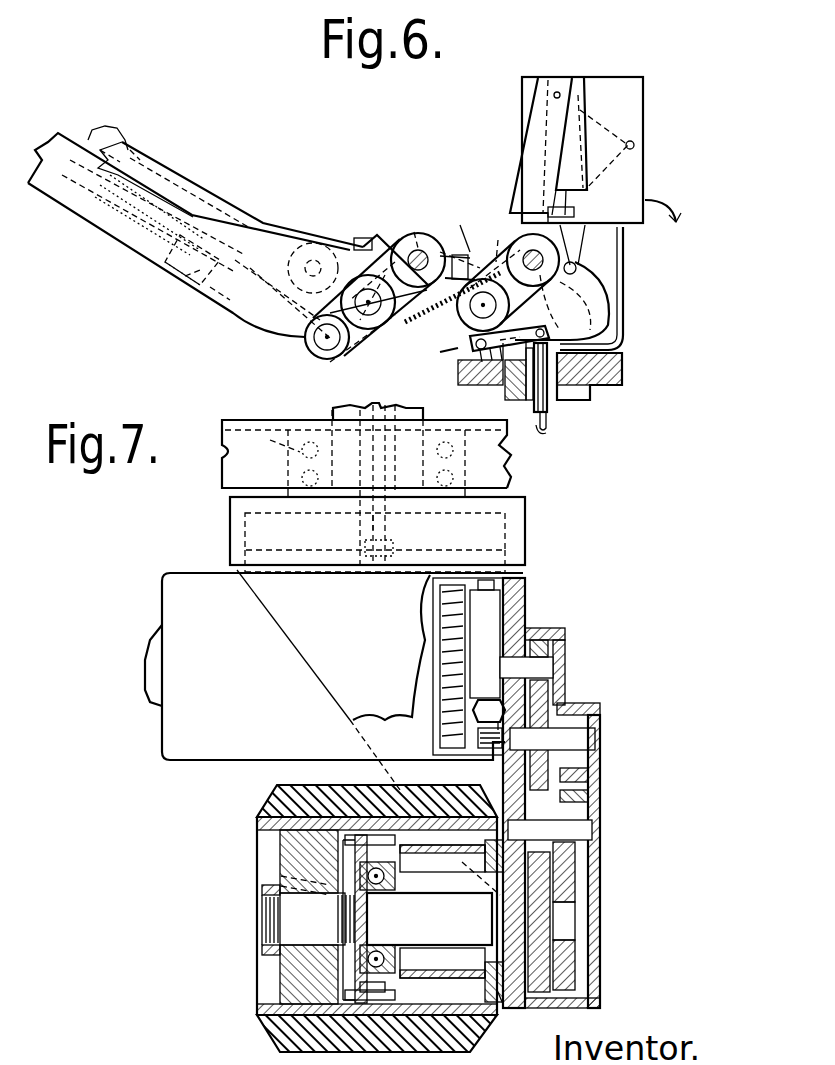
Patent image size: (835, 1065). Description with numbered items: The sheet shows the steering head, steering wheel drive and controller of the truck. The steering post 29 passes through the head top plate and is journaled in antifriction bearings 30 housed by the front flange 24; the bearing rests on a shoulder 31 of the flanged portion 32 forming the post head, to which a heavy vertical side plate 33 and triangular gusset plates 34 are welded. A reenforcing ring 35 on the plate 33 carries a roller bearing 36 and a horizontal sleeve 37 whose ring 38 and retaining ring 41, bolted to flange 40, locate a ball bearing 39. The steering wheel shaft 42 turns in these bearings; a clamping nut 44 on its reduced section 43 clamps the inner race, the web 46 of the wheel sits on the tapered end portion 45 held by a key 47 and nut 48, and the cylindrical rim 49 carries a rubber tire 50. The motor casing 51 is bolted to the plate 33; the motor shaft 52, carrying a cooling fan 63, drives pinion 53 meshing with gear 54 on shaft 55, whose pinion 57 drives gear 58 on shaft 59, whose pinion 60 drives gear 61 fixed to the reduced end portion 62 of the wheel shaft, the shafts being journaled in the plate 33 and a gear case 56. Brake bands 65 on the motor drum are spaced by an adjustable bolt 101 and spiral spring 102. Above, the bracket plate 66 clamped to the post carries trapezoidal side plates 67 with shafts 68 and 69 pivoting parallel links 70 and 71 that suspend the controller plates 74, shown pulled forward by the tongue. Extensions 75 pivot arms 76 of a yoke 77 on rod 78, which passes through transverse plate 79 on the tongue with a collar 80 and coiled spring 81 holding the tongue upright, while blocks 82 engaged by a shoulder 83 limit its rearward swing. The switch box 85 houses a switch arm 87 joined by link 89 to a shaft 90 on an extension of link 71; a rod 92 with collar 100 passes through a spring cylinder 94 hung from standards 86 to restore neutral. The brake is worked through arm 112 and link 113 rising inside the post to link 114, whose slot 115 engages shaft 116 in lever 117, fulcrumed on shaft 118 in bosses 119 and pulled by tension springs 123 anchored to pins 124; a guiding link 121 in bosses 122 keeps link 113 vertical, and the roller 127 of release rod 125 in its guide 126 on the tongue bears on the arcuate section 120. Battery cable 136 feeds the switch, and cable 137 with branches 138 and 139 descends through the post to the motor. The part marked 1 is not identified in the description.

In FIG. 7, the beam 1 is at (222, 452).
In FIG. 7, the front flange 24 is at (252, 468).
In FIG. 6, the steering post 29 is at (588, 390).
In FIG. 7, the steering post 29 is at (333, 412).
In FIG. 7, the antifriction bearings 30 is at (300, 452).
In FIG. 7, the shoulder 31 is at (522, 499).
In FIG. 7, the flanged portion 32 is at (488, 534).
In FIG. 7, the vertical side plate 33 is at (520, 623).
In FIG. 7, the gusset plates 34 is at (328, 667).
In FIG. 7, the reenforcing ring 35 is at (496, 994).
In FIG. 7, the roller bearing 36 is at (495, 882).
In FIG. 7, the cylindrical sleeve 37 is at (462, 862).
In FIG. 7, the ring 38 is at (397, 870).
In FIG. 7, the ball bearing 39 is at (381, 869).
In FIG. 7, the flange 40 is at (386, 990).
In FIG. 7, the retaining ring 41 is at (356, 970).
In FIG. 7, the steering wheel shaft 42 is at (462, 932).
In FIG. 7, the reduced section 43 is at (380, 904).
In FIG. 7, the clamping nut 44 is at (352, 892).
In FIG. 7, the tapered end portion 45 is at (292, 931).
In FIG. 7, the web 46 is at (281, 849).
In FIG. 7, the key 47 is at (281, 876).
In FIG. 7, the nut 48 is at (262, 893).
In FIG. 7, the rim 49 is at (258, 823).
In FIG. 7, the tire 50 is at (276, 796).
In FIG. 7, the motor casing 51 is at (232, 730).
In FIG. 7, the motor shaft 52 is at (540, 666).
In FIG. 7, the pinion 53 is at (565, 641).
In FIG. 7, the gear 54 is at (548, 700).
In FIG. 7, the shaft 55 is at (586, 739).
In FIG. 7, the gear case 56 is at (600, 776).
In FIG. 7, the pinion 57 is at (593, 713).
In FIG. 7, the gear 58 is at (575, 794).
In FIG. 7, the shaft 59 is at (576, 831).
In FIG. 7, the pinion 60 is at (570, 816).
In FIG. 7, the gear 61 is at (547, 957).
In FIG. 7, the reduced end portion 62 is at (548, 925).
In FIG. 7, the cooling fan 63 is at (447, 616).
In FIG. 7, the brake bands 65 is at (489, 618).
In FIG. 6, the plate 66 is at (624, 368).
In FIG. 6, the side plates 67 is at (460, 372).
In FIG. 6, the shaft 68 is at (415, 250).
In FIG. 6, the shaft 69 is at (533, 250).
In FIG. 6, the link 70 is at (380, 258).
In FIG. 6, the link 71 is at (508, 254).
In FIG. 6, the controller plates 74 is at (369, 318).
In FIG. 6, the extensions 75 is at (306, 339).
In FIG. 6, the arms 76 is at (246, 305).
In FIG. 6, the yoke 77 is at (215, 290).
In FIG. 6, the rod 78 is at (192, 280).
In FIG. 6, the transverse plate 79 is at (112, 143).
In FIG. 6, the collar 80 is at (172, 276).
In FIG. 6, the coiled spring 81 is at (120, 243).
In FIG. 6, the blocks 82 is at (368, 330).
In FIG. 6, the shoulder 83 is at (356, 249).
In FIG. 6, the switch box 85 is at (640, 161).
In FIG. 6, the standards 86 is at (538, 112).
In FIG. 6, the switch arm 87 is at (633, 147).
In FIG. 6, the link 89 is at (580, 236).
In FIG. 6, the shaft 90 is at (582, 272).
In FIG. 6, the rod 92 is at (568, 203).
In FIG. 6, the cylinder 94 is at (572, 116).
In FIG. 6, the collar 100 is at (576, 214).
In FIG. 7, the adjustable bolt 101 is at (480, 706).
In FIG. 7, the spiral spring 102 is at (482, 731).
In FIG. 7, the arm 112 is at (365, 545).
In FIG. 6, the link 113 is at (548, 402).
In FIG. 7, the link 113 is at (373, 520).
In FIG. 6, the link 114 is at (546, 336).
In FIG. 6, the longitudinal slot 115 is at (498, 240).
In FIG. 6, the shaft 116 is at (458, 262).
In FIG. 6, the lever 117 is at (456, 253).
In FIG. 6, the shaft 118 is at (414, 232).
In FIG. 6, the bosses 119 is at (444, 256).
In FIG. 6, the arcuate section 120 is at (362, 240).
In FIG. 6, the guiding link 121 is at (503, 376).
In FIG. 6, the bosses 122 is at (474, 343).
In FIG. 6, the tension springs 123 is at (447, 346).
In FIG. 6, the pins 124 is at (420, 325).
In FIG. 6, the rod 125 is at (100, 128).
In FIG. 6, the guide 126 is at (168, 164).
In FIG. 6, the roller 127 is at (312, 258).
In FIG. 6, the flexible cable 136 is at (680, 208).
In FIG. 6, the cable 137 is at (627, 272).
In FIG. 6, the branch 138 is at (551, 425).
In FIG. 6, the branch 139 is at (542, 432).